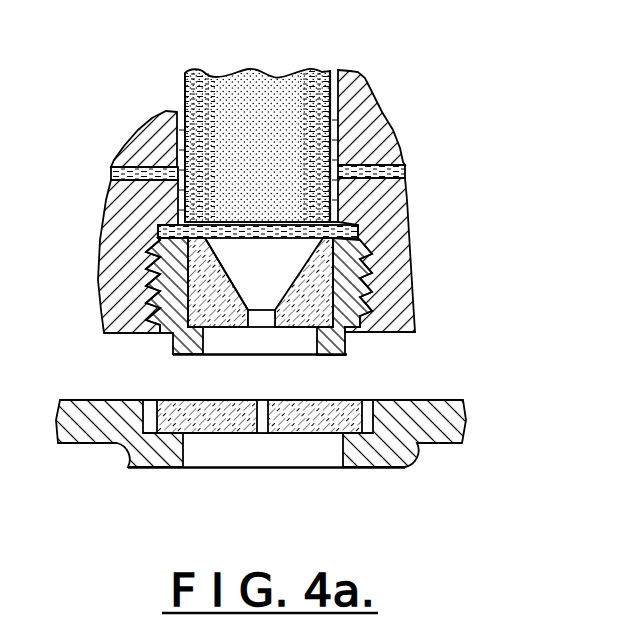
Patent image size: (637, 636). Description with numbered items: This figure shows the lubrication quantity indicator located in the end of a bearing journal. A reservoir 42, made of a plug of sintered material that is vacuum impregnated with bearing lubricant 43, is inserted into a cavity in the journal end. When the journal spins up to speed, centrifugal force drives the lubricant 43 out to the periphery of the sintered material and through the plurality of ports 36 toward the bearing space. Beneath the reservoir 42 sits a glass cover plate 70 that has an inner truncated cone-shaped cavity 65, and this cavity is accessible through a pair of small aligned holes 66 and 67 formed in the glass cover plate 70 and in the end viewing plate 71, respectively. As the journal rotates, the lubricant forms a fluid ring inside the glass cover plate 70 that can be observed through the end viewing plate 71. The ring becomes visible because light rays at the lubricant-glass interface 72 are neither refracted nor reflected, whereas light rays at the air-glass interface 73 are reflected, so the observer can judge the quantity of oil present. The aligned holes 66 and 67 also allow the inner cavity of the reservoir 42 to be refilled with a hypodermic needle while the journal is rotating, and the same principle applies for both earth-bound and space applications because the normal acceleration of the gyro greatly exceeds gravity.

The ports 36 is at (112, 172).
The reservoir 42 is at (277, 76).
The lubricant 43 is at (197, 72).
The inner truncated cone-shaped cavity 65 is at (272, 266).
The small hole 66 is at (265, 316).
The small hole 67 is at (262, 434).
The glass cover plate 70 is at (307, 328).
The end viewing plate 71 is at (261, 437).
The lubricant-glass interface 72 is at (300, 252).
The air-glass interface 73 is at (242, 286).